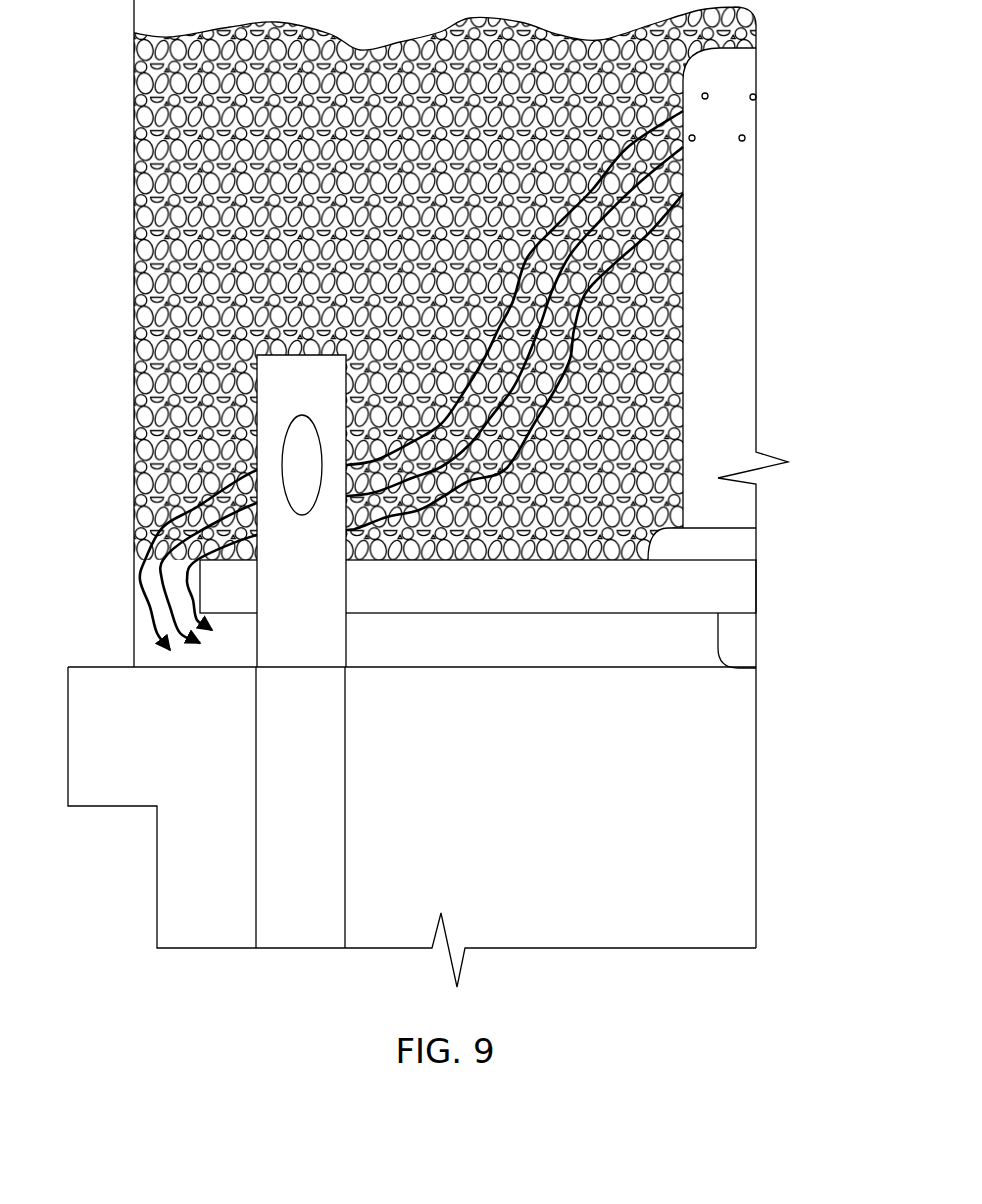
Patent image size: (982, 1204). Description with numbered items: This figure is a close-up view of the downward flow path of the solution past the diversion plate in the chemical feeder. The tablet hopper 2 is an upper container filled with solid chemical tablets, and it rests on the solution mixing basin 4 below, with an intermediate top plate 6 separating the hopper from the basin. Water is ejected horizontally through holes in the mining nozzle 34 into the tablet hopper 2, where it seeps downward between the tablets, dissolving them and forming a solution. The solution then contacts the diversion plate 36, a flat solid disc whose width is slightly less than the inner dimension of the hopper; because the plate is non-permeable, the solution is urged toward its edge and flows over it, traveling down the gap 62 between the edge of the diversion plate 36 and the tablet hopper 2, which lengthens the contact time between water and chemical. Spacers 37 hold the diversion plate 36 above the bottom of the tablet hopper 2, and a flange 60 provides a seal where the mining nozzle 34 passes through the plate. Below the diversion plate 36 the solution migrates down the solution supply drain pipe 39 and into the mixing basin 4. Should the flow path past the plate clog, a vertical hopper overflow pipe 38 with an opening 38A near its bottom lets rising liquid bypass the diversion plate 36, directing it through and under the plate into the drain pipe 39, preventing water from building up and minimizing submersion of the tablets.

The tablet hopper 2 is at (134, 173).
The solution mixing basin 4 is at (180, 858).
The intermediate top plate 6 is at (102, 667).
The mining nozzle 34 is at (738, 86).
The diversion plate 36 is at (737, 590).
The spacers 37 is at (737, 640).
The hopper overflow pipe 38 is at (290, 355).
The opening 38A is at (293, 417).
The solution supply drain pipe 39 is at (323, 765).
The flange 60 is at (737, 547).
The gap 62 is at (148, 571).